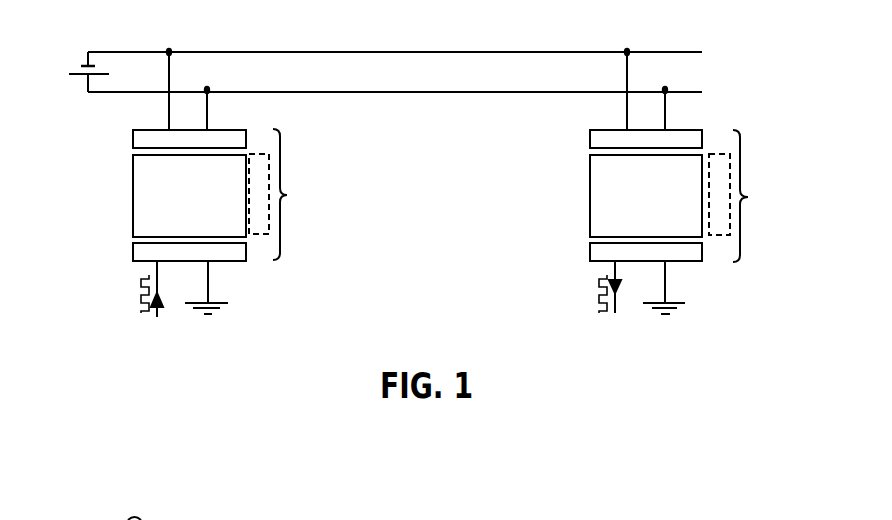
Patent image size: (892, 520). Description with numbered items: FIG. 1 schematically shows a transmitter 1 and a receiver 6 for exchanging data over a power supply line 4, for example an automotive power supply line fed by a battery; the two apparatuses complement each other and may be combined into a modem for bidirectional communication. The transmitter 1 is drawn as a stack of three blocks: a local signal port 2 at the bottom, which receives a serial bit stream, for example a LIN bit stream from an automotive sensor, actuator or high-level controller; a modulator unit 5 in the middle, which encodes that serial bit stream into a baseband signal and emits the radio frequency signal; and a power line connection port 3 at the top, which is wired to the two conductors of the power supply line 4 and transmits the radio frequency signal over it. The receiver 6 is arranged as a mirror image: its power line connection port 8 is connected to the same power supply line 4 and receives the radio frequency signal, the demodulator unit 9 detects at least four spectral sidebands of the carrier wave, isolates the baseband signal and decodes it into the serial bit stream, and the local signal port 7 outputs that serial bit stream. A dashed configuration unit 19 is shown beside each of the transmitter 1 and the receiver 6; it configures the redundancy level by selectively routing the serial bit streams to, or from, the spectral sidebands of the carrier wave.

The transmitter 1 is at (189, 197).
The local signal port 2 is at (133, 253).
The power line connection port 3 is at (133, 142).
The power supply line 4 is at (112, 52).
The modulator unit 5 is at (133, 207).
The receiver 6 is at (635, 197).
The local signal port 7 is at (590, 253).
The power line connection port 8 is at (590, 143).
The demodulator unit 9 is at (590, 207).
The configuration unit 19 is at (502, 234).